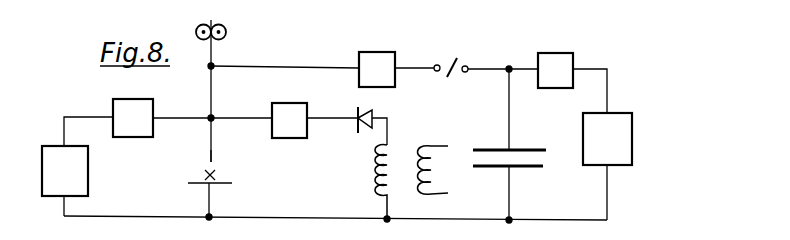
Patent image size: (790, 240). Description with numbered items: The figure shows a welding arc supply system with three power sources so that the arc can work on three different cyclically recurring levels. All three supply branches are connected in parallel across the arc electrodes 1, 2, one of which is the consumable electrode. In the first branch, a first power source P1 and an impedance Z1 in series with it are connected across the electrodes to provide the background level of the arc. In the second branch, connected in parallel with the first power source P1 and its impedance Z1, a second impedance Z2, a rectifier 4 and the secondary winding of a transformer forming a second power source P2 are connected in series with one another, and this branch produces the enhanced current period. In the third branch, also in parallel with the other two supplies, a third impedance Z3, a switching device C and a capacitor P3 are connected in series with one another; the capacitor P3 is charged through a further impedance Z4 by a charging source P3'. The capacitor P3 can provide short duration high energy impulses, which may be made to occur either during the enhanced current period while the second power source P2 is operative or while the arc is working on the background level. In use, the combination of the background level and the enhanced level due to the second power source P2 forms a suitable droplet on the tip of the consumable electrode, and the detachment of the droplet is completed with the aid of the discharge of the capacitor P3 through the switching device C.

The electrode 1 is at (209, 162).
The electrode 2 is at (200, 186).
The rectifier 4 is at (366, 118).
The switching device C is at (451, 81).
The first power source P1 is at (65, 171).
The second power source P2 is at (379, 189).
The capacitor P3 is at (509, 144).
The charging source P3' is at (607, 139).
The impedance Z1 is at (133, 118).
The second impedance Z2 is at (289, 120).
The third impedance Z3 is at (377, 69).
The further impedance Z4 is at (555, 70).